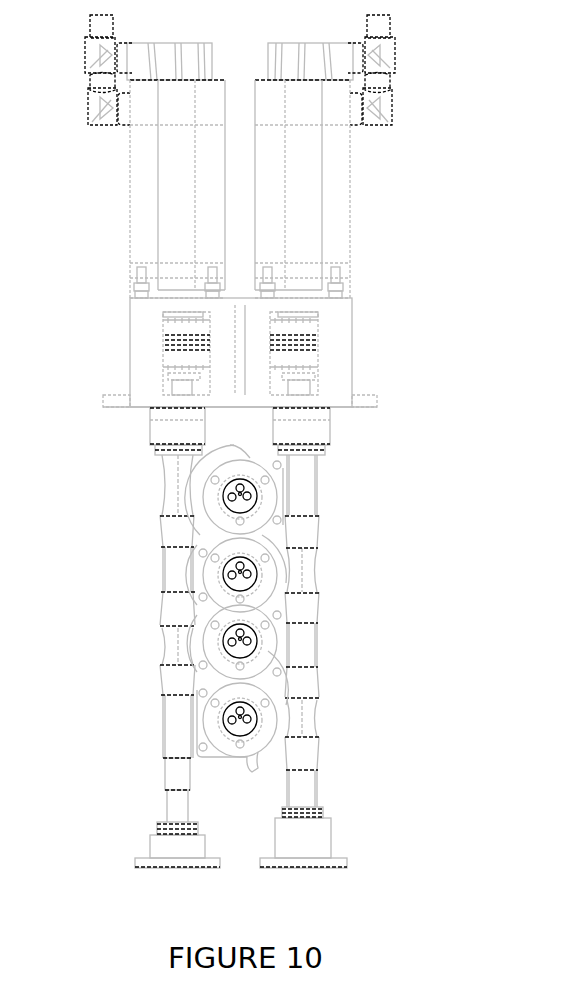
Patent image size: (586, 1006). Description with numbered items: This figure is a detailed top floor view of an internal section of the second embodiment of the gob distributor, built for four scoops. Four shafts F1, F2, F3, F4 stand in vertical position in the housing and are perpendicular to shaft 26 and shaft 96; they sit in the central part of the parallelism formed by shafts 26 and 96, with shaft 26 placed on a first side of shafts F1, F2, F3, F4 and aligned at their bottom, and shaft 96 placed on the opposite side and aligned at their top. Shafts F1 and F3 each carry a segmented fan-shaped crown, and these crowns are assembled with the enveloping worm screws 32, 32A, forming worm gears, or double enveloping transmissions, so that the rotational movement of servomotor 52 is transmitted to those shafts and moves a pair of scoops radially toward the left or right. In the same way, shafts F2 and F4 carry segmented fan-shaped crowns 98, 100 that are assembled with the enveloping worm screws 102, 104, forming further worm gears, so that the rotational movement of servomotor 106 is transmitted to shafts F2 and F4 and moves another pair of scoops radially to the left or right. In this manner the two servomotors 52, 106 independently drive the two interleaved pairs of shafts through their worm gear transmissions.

The servomotor 52 is at (145, 183).
The servomotor 106 is at (313, 205).
The enveloping worm screw 32 is at (172, 500).
The enveloping worm screw 32A is at (175, 635).
The shaft 26 is at (190, 777).
The shaft 96 is at (307, 788).
The segmented fan-shaped crown 98 is at (283, 556).
The segmented fan-shaped crown 100 is at (283, 698).
The enveloping worm screw 102 is at (307, 574).
The enveloping worm screw 104 is at (305, 705).
The shaft F1 is at (242, 497).
The shaft F2 is at (242, 575).
The shaft F3 is at (242, 640).
The shaft F4 is at (250, 722).